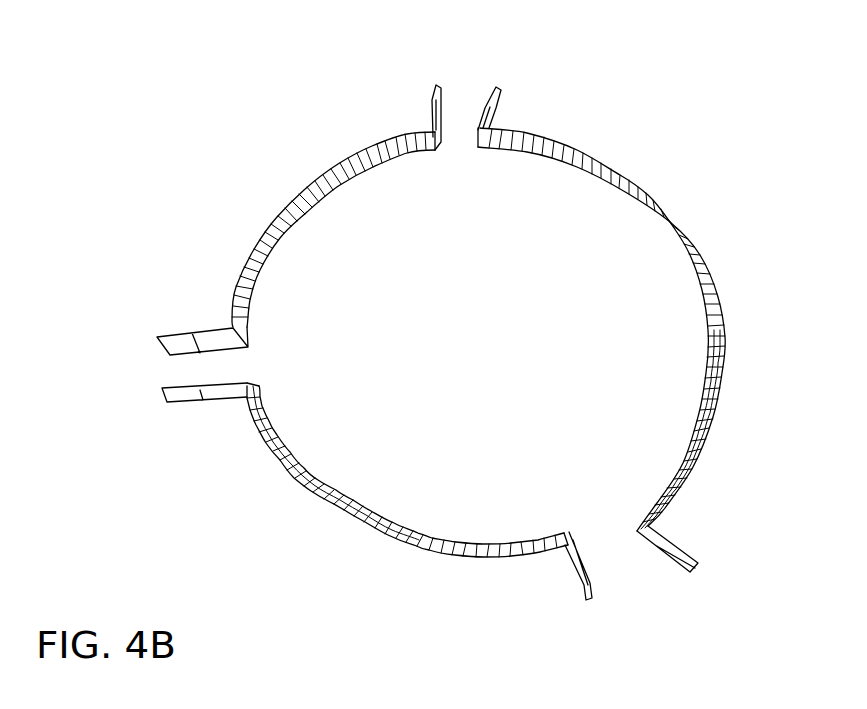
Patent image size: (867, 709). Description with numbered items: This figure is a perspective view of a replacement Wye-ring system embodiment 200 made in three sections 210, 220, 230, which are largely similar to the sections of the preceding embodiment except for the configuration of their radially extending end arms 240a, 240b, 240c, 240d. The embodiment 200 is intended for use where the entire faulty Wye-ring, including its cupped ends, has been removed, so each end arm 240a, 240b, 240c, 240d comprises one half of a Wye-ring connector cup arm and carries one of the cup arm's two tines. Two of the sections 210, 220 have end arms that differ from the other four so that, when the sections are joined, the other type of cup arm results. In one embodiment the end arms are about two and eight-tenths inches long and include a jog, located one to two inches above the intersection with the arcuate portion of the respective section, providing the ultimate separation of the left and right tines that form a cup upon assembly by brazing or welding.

The embodiment 200 is at (276, 81).
The section 210 is at (333, 502).
The section 220 is at (276, 208).
The section 230 is at (702, 262).
The radially extending end arm 240a is at (168, 336).
The radially extending end arm 240b is at (195, 397).
The radially extending end arm 240c is at (432, 90).
The radially extending end arm 240d is at (502, 90).